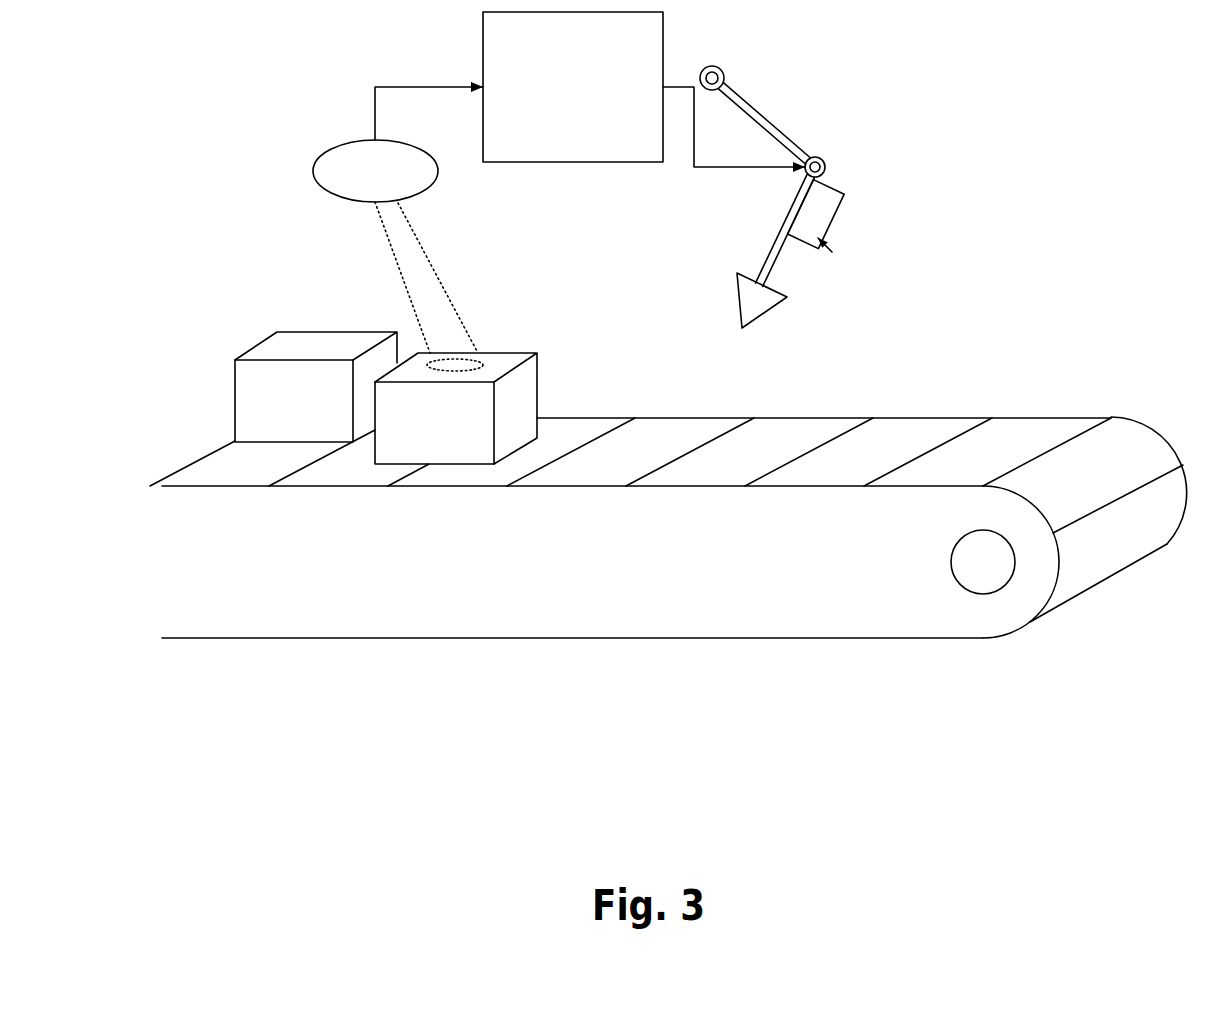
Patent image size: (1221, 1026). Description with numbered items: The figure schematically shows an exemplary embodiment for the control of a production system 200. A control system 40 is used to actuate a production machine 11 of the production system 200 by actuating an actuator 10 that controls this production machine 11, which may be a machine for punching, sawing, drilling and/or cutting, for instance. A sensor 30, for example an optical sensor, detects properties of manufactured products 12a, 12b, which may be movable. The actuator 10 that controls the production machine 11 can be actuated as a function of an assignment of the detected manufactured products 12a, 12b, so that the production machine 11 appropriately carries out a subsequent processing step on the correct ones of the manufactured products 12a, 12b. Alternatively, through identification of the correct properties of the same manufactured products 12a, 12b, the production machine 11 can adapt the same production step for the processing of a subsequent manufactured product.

The control system 40 is at (468, 21).
The sensor 30 is at (313, 175).
The production machine 11 is at (783, 133).
The actuator 10 is at (843, 215).
The manufactured product 12a is at (545, 387).
The manufactured product 12b is at (253, 348).
The production system 200 is at (558, 643).